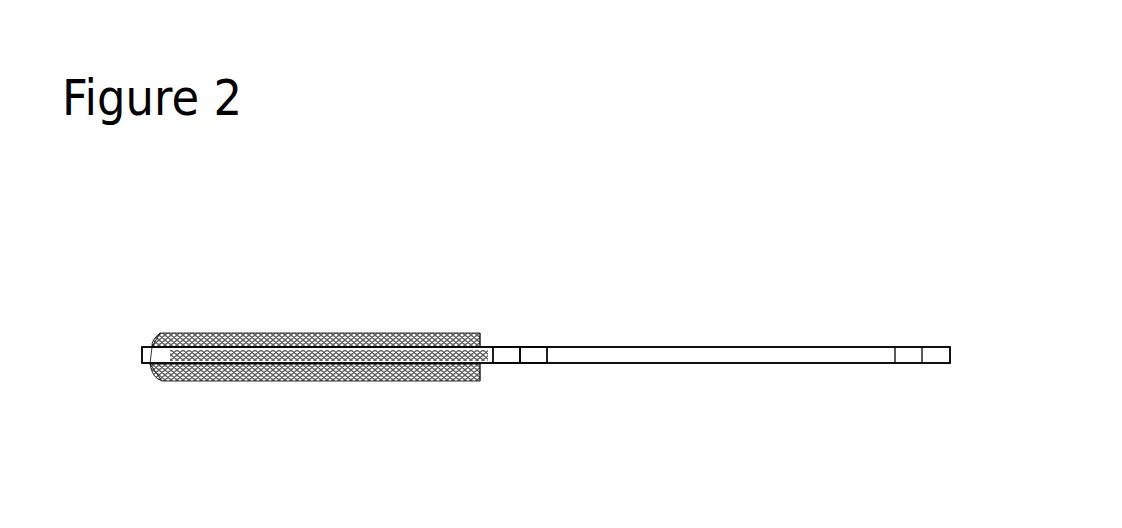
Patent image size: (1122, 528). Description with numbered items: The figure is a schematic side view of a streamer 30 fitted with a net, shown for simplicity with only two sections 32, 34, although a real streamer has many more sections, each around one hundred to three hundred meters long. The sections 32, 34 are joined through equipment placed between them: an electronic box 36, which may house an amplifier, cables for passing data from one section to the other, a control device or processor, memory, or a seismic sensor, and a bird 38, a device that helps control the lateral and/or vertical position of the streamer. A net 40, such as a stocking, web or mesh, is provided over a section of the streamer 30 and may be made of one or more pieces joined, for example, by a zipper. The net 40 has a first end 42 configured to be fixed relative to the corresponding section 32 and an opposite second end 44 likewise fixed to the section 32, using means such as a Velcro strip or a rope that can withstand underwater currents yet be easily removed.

The streamer 30 is at (609, 150).
The section 32 is at (297, 352).
The section 34 is at (728, 355).
The electronic box 36 is at (507, 358).
The bird 38 is at (537, 358).
The net 40 is at (213, 333).
The first end 42 is at (160, 332).
The second end 44 is at (473, 332).